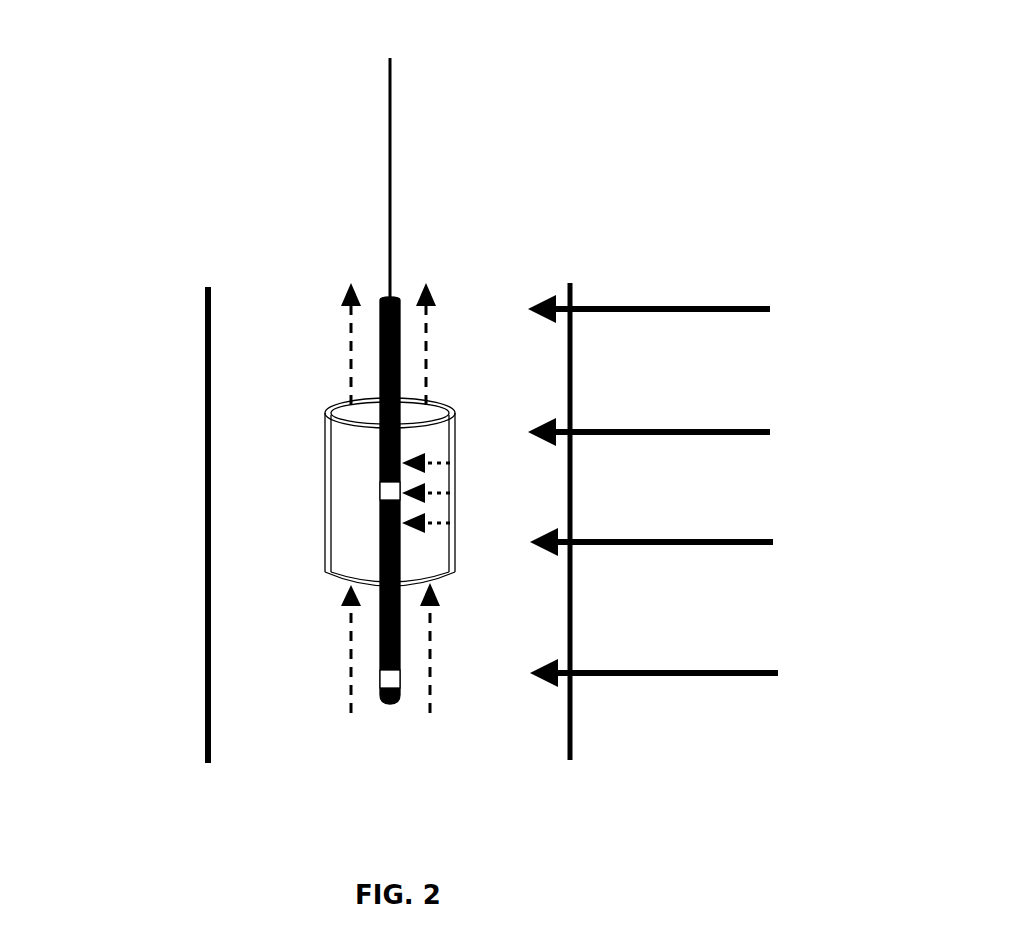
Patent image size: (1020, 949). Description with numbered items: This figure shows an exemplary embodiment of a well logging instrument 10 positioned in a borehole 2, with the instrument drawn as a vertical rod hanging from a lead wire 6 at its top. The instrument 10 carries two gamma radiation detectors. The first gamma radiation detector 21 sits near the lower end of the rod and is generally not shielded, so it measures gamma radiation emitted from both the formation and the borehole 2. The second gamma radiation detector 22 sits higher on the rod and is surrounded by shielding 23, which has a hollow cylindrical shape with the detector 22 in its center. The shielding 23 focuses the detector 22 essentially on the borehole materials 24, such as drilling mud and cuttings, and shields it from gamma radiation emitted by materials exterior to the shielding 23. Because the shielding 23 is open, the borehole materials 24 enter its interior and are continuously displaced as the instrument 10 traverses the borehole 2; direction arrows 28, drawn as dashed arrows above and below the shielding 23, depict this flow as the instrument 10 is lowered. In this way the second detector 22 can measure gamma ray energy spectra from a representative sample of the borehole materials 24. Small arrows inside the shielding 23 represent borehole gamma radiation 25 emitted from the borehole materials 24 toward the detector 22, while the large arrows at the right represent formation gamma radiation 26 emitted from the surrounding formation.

The borehole 2 is at (205, 305).
The lead wire 6 is at (393, 88).
The well logging instrument 10 is at (378, 296).
The first gamma radiation detector 21 is at (380, 680).
The second gamma radiation detector 22 is at (380, 488).
The shielding 23 is at (452, 406).
The borehole materials 24 is at (278, 338).
The borehole gamma radiation 25 is at (467, 463).
The formation gamma radiation 26 is at (783, 432).
The direction arrows 28 is at (428, 713).